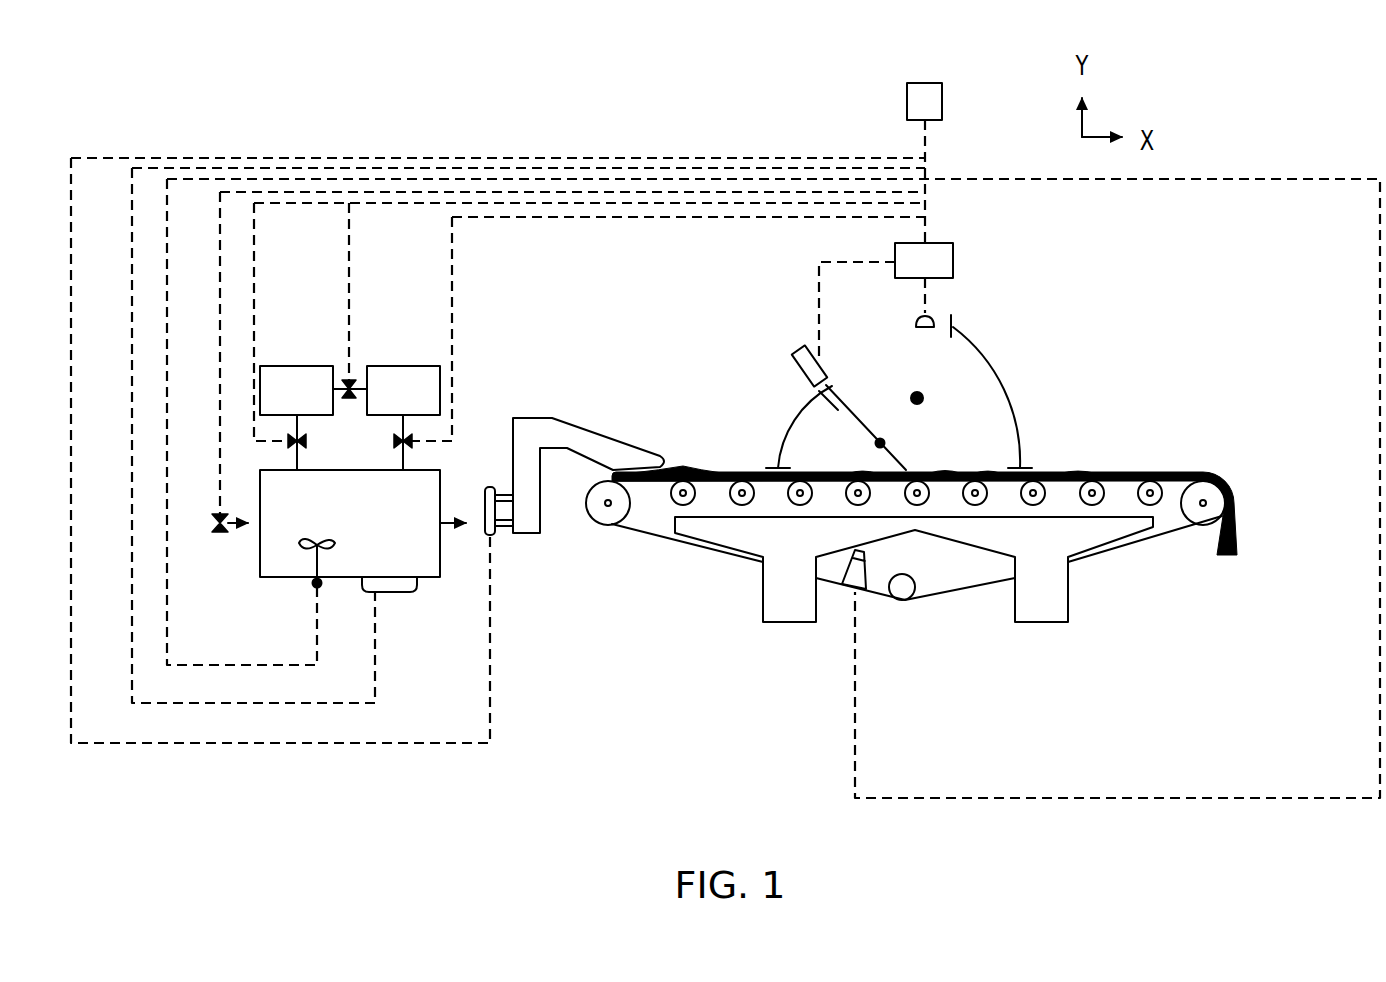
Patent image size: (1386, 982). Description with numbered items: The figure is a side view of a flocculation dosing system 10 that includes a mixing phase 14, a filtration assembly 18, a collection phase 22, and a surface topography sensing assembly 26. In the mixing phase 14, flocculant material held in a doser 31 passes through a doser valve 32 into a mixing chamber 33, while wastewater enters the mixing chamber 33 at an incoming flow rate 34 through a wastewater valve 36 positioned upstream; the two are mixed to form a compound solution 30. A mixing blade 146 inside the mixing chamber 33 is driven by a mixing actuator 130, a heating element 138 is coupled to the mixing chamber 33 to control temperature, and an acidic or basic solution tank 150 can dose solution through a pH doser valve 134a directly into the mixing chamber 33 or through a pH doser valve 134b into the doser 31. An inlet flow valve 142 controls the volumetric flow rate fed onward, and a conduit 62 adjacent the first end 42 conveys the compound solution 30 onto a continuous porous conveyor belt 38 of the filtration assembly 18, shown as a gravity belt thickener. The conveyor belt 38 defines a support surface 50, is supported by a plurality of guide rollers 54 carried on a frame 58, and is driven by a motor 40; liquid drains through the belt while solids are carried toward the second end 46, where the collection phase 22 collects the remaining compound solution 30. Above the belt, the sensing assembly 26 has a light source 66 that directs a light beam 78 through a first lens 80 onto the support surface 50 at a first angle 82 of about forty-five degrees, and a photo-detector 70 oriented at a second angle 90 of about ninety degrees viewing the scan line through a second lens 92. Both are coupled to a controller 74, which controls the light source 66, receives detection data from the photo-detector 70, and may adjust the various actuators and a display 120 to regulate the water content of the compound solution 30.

The flocculation dosing system 10 is at (1293, 136).
The mixing phase 14 is at (424, 623).
The filtration assembly 18 is at (1007, 677).
The collection phase 22 is at (1275, 467).
The surface topography sensing assembly 26 is at (1056, 311).
The compound solution 30 is at (1125, 471).
The doser 31 is at (403, 366).
The doser valve 32 is at (412, 444).
The mixing chamber 33 is at (440, 570).
The incoming flow rate 34 is at (229, 527).
The wastewater valve 36 is at (216, 515).
The conveyor belt 38 is at (1175, 540).
The motor 40 is at (867, 576).
The first end 42 is at (643, 558).
The second end 46 is at (1217, 451).
The support surface 50 is at (608, 481).
The guide rollers 54 is at (606, 518).
The frame 58 is at (763, 605).
The conduit 62 is at (511, 438).
The light source 66 is at (801, 352).
The photo-detector 70 is at (937, 316).
The controller 74 is at (893, 278).
The light beam 78 is at (851, 410).
The first lens 80 is at (885, 443).
The first angle 82 is at (795, 428).
The second angle 90 is at (1010, 397).
The second lens 92 is at (921, 396).
The display 120 is at (935, 83).
The mixing actuator 130 is at (313, 586).
The pH doser valve 134a is at (307, 441).
The pH doser valve 134b is at (352, 380).
The heating element 138 is at (393, 593).
The inlet flow valve 142 is at (492, 535).
The mixing blade 146 is at (323, 538).
The acidic and basic solution tank 150 is at (297, 366).